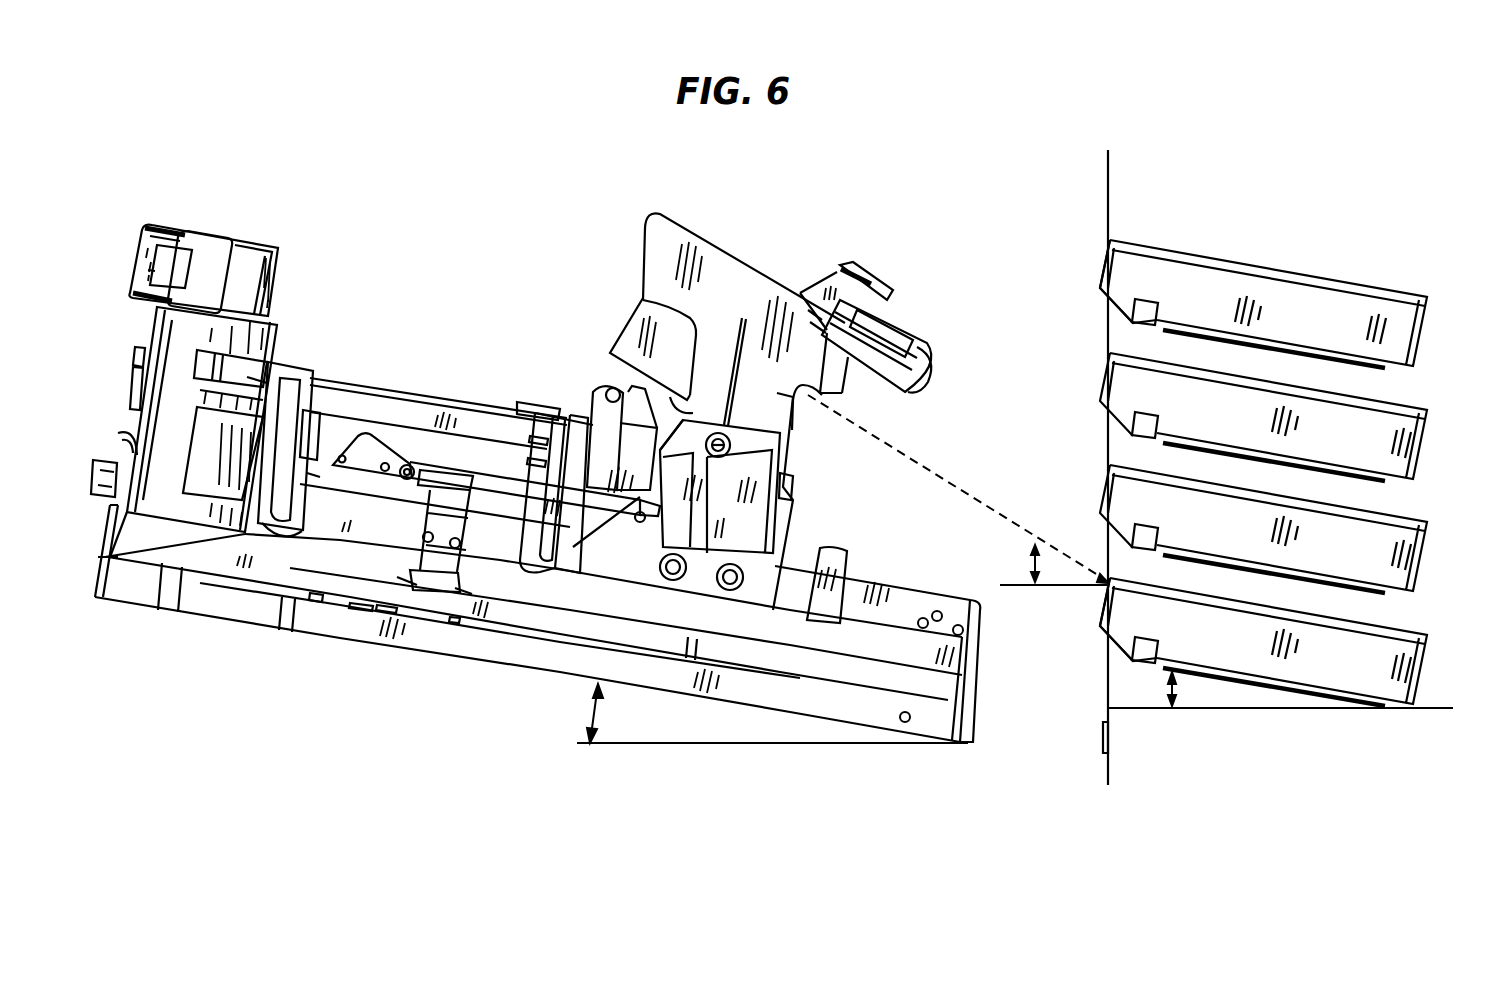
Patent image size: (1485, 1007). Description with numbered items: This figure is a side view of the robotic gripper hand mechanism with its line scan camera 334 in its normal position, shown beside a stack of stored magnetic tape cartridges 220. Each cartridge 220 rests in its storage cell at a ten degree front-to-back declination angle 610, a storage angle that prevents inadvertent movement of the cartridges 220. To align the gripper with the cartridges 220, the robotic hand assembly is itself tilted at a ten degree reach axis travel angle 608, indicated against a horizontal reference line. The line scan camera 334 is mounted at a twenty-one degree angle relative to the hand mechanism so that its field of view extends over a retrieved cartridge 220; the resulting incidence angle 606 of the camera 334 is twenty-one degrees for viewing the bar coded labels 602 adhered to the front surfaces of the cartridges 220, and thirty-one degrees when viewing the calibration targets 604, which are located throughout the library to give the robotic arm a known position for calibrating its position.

The magnetic tape cartridge 220 is at (1300, 270).
The line scan camera 334 is at (630, 327).
The bar coded label 602 is at (1100, 268).
The calibration target 604 is at (1102, 613).
The incidence angle 606 is at (1033, 560).
The reach axis travel angle 608 is at (587, 712).
The front-to-back declination angle 610 is at (1167, 687).